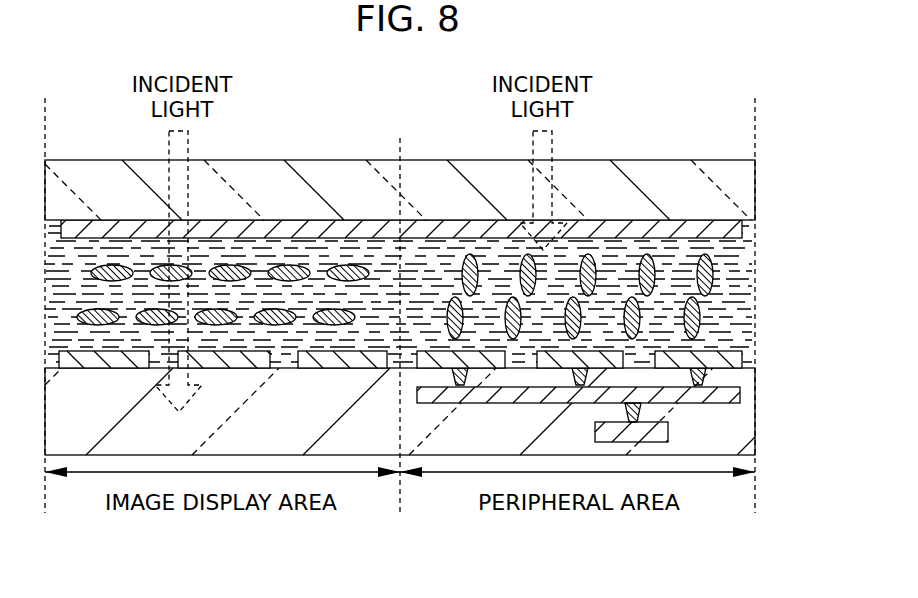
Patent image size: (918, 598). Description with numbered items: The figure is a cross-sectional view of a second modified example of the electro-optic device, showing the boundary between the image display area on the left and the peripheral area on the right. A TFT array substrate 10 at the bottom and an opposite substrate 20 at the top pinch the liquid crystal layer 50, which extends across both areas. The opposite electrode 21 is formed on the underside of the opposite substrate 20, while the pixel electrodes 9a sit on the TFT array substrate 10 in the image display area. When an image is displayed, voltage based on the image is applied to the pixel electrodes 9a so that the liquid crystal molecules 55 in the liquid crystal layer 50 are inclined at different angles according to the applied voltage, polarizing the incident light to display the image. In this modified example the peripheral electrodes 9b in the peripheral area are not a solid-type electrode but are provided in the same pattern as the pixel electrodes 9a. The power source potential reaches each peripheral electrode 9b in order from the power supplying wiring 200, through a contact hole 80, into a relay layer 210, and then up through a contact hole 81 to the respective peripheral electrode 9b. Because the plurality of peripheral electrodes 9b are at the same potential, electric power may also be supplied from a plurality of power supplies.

The TFT array substrate 10 is at (750, 423).
The opposite substrate 20 is at (760, 185).
The opposite electrode 21 is at (742, 228).
The liquid crystal layer 50 is at (750, 283).
The liquid crystal molecules 55 is at (293, 267).
The pixel electrode 9a is at (262, 403).
The peripheral electrode 9b is at (745, 353).
The contact hole 81 is at (708, 372).
The contact hole 80 is at (643, 410).
The power supplying wiring 200 is at (595, 430).
The relay layer 210 is at (430, 402).